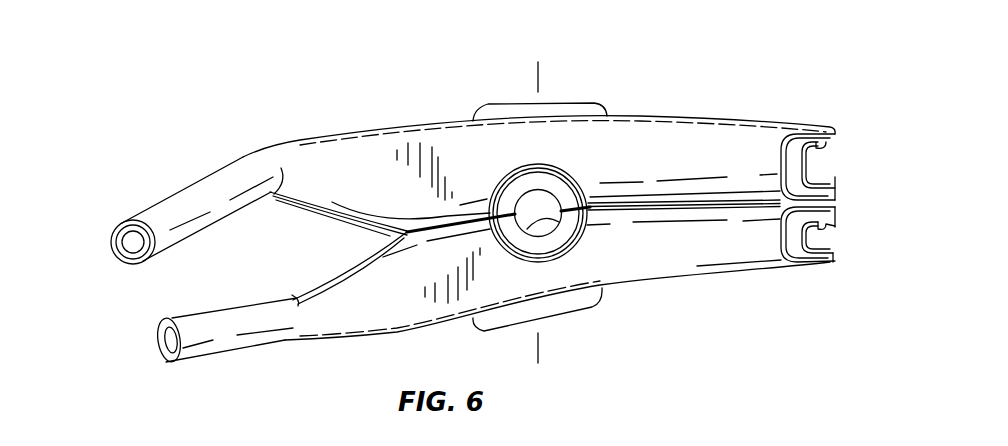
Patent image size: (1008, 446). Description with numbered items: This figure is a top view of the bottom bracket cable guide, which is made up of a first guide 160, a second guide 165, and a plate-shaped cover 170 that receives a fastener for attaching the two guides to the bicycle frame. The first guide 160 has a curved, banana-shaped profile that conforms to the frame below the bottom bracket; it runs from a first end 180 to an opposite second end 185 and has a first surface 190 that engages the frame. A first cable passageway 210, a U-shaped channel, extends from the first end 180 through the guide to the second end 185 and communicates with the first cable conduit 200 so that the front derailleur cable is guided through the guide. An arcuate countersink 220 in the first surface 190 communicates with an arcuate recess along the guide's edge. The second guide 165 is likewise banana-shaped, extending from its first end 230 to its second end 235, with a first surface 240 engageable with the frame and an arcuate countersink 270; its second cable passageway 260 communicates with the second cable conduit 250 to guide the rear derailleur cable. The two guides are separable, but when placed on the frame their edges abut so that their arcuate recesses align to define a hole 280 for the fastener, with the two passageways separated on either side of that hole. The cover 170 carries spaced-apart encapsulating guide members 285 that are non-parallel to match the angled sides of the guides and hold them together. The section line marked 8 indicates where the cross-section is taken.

The section line 8- 8 is at (541, 348).
The first guide 160 is at (737, 118).
The second guide 165 is at (730, 278).
The cover 170 is at (600, 115).
The first end 180 is at (828, 188).
The second end 185 is at (293, 157).
The first surface 190 is at (448, 150).
The first cable conduit 200 is at (197, 196).
The first cable passageway 210 is at (822, 142).
The arcuate countersink 220 is at (560, 190).
The first end 230 is at (833, 262).
The second end 235 is at (328, 323).
The first surface 240 is at (677, 263).
The second cable conduit 250 is at (222, 344).
The second cable passageway 260 is at (820, 232).
The arcuate countersink 270 is at (567, 232).
The hole 280 is at (527, 229).
The guide members 285 is at (502, 112).